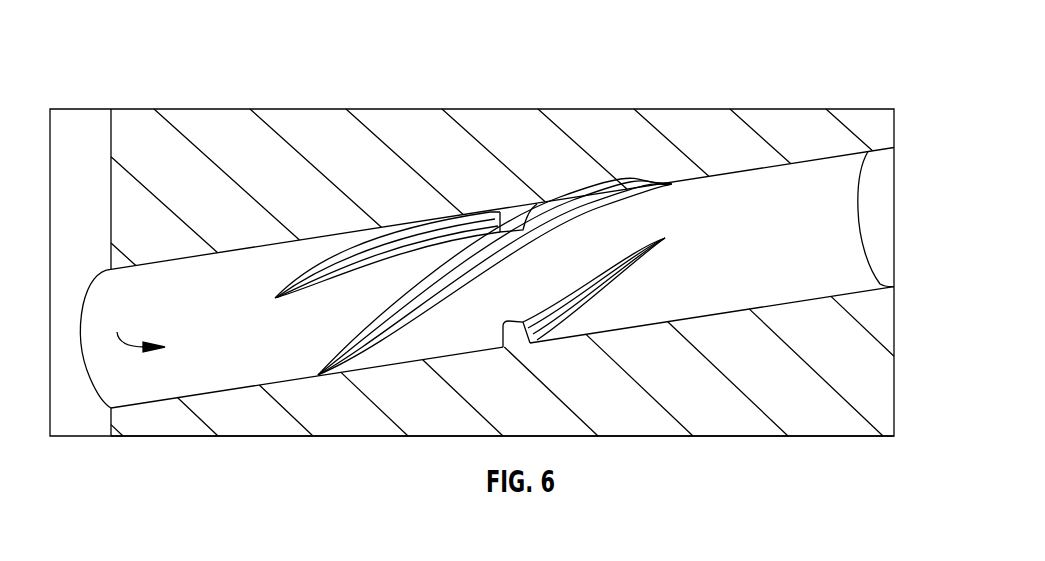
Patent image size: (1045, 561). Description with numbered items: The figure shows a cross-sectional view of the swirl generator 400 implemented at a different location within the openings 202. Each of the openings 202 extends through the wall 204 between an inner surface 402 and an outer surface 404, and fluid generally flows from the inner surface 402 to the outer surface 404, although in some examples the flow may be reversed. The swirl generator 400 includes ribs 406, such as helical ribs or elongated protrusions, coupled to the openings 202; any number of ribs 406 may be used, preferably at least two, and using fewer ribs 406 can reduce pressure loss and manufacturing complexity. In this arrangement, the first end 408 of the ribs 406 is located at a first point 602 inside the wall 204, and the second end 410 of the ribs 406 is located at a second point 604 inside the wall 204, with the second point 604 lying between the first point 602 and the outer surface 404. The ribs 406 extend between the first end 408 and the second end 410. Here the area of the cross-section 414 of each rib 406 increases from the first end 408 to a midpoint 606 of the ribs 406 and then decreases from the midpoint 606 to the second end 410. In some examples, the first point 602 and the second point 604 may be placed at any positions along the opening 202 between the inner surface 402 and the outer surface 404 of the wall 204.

The openings 202 is at (855, 291).
The wall 204 is at (737, 437).
The swirl generator 400 is at (134, 330).
The inner surface 402 is at (898, 410).
The outer surface 404 is at (97, 108).
The ribs 406 is at (493, 278).
The first end 408 is at (710, 219).
The second end 410 is at (493, 255).
The cross-section 414 is at (547, 340).
The first point 602 is at (672, 183).
The second point 604 is at (493, 255).
The midpoint 606 is at (483, 277).